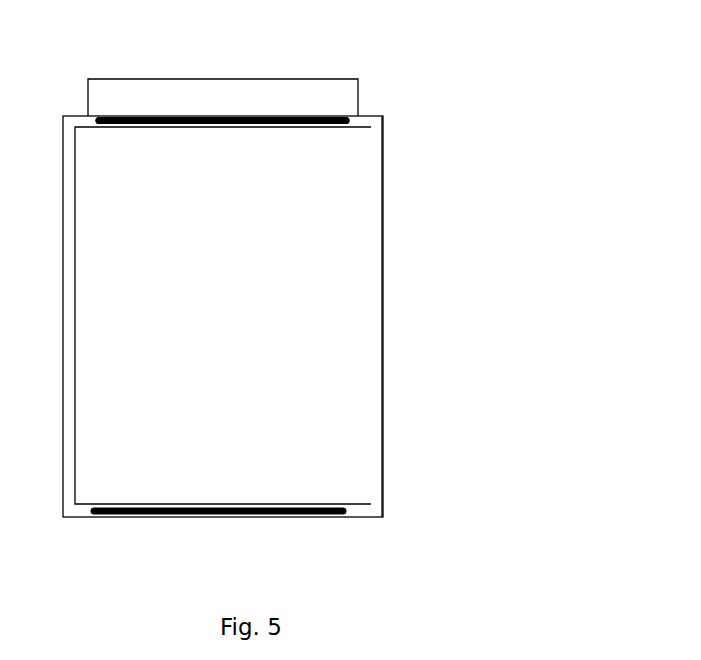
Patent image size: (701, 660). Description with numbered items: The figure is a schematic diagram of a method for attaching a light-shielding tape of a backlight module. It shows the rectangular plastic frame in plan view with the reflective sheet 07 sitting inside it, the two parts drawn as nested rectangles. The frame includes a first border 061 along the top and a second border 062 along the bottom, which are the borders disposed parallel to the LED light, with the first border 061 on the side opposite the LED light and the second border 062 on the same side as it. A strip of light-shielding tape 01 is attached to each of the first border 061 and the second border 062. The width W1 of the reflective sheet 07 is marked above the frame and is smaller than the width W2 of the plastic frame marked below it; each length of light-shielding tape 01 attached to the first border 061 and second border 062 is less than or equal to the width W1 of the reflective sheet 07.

The reflective sheet 07 is at (223, 267).
The light-shielding tape 01 is at (242, 120).
The first border 061 is at (365, 120).
The second border 062 is at (368, 509).
The width of the reflective sheet W1 is at (223, 84).
The width of the plastic frame W2 is at (204, 530).